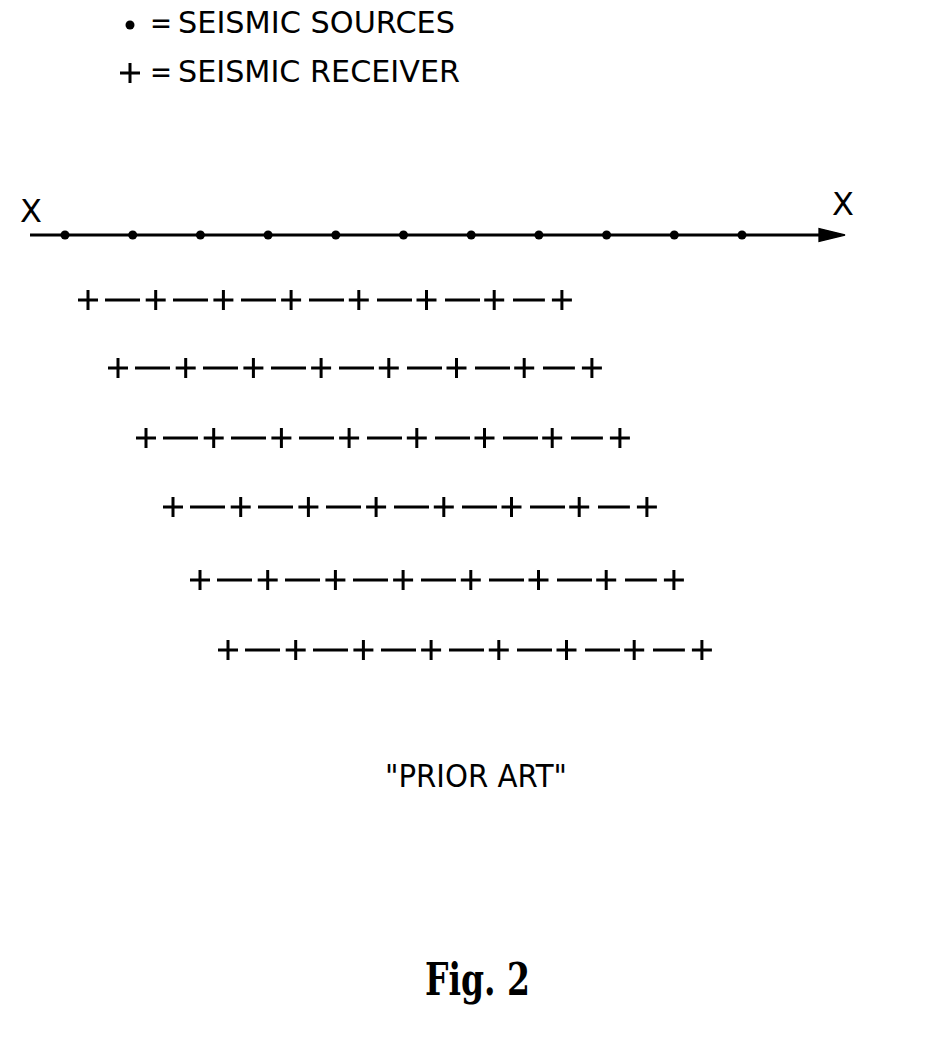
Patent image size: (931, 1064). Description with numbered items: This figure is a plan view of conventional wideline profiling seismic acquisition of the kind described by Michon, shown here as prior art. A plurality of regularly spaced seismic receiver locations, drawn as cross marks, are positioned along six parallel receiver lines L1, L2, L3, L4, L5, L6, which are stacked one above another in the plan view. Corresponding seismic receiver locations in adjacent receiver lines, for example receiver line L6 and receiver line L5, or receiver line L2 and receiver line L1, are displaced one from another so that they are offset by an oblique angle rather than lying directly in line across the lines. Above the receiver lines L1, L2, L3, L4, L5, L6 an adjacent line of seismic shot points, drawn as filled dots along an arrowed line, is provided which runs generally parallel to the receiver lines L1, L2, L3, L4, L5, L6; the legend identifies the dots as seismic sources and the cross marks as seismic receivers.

The receiver line L1 is at (674, 650).
The receiver line L2 is at (646, 580).
The receiver line L3 is at (619, 507).
The receiver line L4 is at (592, 438).
The receiver line L5 is at (564, 368).
The receiver line L6 is at (534, 300).